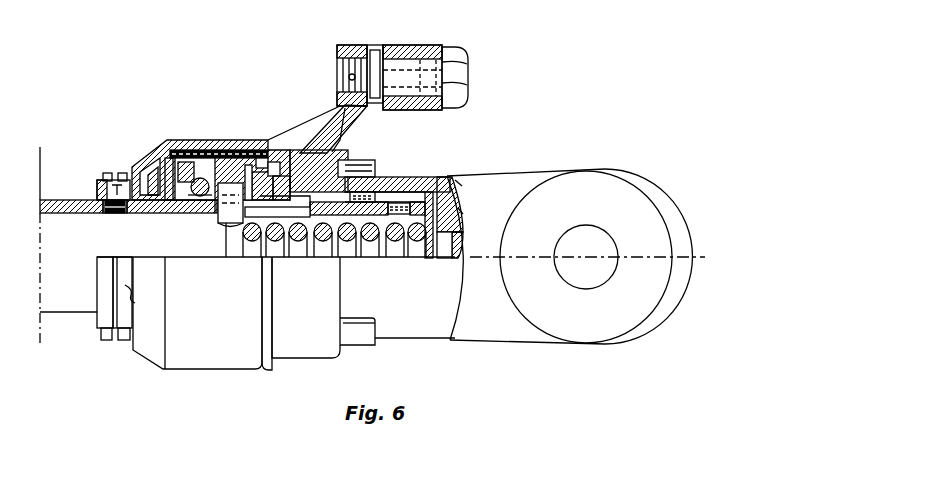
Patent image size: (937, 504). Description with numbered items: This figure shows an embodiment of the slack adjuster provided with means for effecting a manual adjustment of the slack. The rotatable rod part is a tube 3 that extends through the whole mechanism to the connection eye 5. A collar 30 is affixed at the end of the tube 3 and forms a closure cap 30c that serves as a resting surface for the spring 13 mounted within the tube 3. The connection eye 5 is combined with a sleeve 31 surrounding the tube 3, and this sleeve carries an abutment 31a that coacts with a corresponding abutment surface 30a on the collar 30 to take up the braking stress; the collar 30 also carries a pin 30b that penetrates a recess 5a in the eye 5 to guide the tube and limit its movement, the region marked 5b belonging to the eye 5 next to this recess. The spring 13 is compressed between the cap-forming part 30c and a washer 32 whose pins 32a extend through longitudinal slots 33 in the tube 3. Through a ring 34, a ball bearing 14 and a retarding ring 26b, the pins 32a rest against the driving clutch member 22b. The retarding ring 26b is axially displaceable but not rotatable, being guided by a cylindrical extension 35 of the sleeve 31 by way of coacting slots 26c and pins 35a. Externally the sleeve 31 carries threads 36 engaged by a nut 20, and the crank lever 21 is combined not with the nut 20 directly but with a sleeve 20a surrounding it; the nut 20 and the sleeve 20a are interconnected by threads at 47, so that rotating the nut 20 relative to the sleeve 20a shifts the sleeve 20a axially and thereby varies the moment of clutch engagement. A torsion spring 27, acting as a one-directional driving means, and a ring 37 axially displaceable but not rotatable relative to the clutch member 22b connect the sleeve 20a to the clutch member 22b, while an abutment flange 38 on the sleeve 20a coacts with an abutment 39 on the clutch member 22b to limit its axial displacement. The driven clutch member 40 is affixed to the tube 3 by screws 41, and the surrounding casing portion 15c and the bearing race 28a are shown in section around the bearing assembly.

The tube 3 is at (65, 200).
The connection eye 5 is at (528, 172).
The recess 5a is at (465, 235).
The cylinder shoulder 5b is at (463, 212).
The spring 13 is at (369, 258).
The ball bearing 14 is at (226, 216).
The housing 15c is at (160, 158).
The nut 20 is at (350, 160).
The sleeve 20a is at (356, 137).
The crank lever 21 is at (337, 50).
The driving clutch member 22b is at (119, 215).
The retarding ring 26b is at (178, 213).
The slots 26c is at (232, 152).
The torsion spring 27 is at (282, 168).
The bearing race 28a is at (195, 150).
The collar 30 is at (445, 180).
The abutment surface 30a is at (400, 192).
The pin 30b is at (442, 258).
The closure cap 30c is at (463, 185).
The sleeve 31 is at (287, 258).
The abutment 31a is at (381, 186).
The washer 32 is at (236, 259).
The pins 32a is at (262, 257).
The longitudinal slots 33 is at (315, 258).
The ring 34 is at (224, 237).
The cylindrical extension 35 is at (275, 163).
The pins 35a is at (258, 172).
The threads 36 is at (302, 156).
The ring 37 is at (258, 155).
The abutment flange 38 is at (170, 150).
The abutment 39 is at (195, 150).
The driven clutch member 40 is at (117, 184).
The screws 41 is at (98, 184).
The threads 47 is at (304, 134).